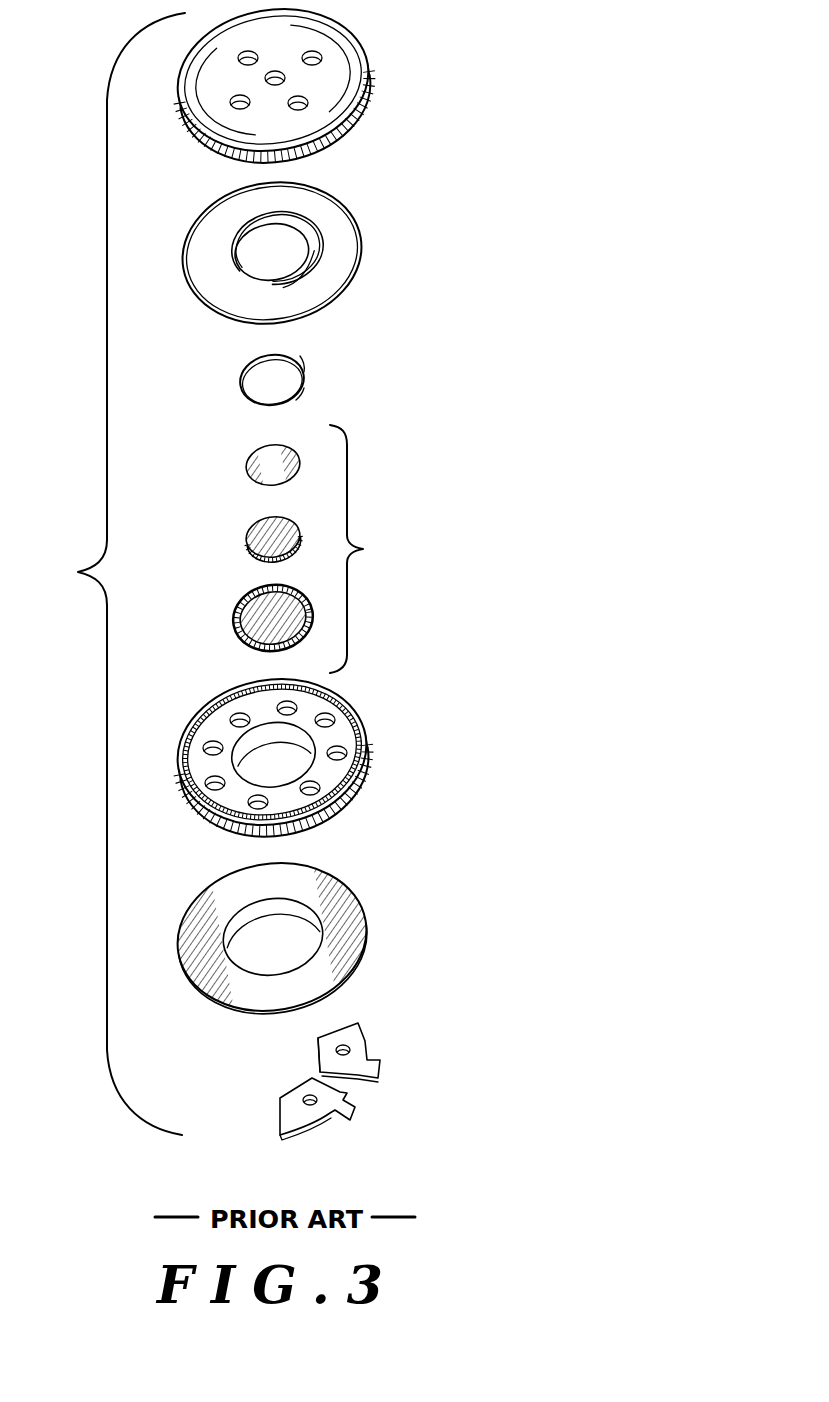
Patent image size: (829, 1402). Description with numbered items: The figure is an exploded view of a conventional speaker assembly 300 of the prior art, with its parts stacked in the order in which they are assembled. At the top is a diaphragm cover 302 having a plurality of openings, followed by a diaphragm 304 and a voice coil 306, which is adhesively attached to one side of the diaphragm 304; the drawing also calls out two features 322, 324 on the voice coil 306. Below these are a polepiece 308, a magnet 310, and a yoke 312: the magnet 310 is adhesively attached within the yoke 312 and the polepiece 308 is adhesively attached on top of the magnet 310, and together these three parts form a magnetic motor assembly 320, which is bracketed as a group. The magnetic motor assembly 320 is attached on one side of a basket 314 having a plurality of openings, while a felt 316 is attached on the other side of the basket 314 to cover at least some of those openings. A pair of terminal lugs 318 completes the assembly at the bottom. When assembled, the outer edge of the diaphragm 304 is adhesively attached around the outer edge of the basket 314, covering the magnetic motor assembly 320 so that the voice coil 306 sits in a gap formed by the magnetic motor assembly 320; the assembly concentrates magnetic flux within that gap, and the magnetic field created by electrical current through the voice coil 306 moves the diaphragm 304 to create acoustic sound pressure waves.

The conventional speaker assembly 300 is at (67, 593).
The diaphragm cover 302 is at (360, 37).
The diaphragm 304 is at (350, 207).
The voice coil 306 is at (248, 372).
The polepiece 308 is at (250, 460).
The magnet 310 is at (253, 533).
The yoke 312 is at (242, 602).
The basket 314 is at (357, 710).
The felt 316 is at (353, 910).
The terminal lugs 318 is at (360, 1035).
The magnetic motor assembly 320 is at (301, 549).
The inner surface of O-ring 322 is at (305, 383).
The outer surface of O-ring 324 is at (306, 368).